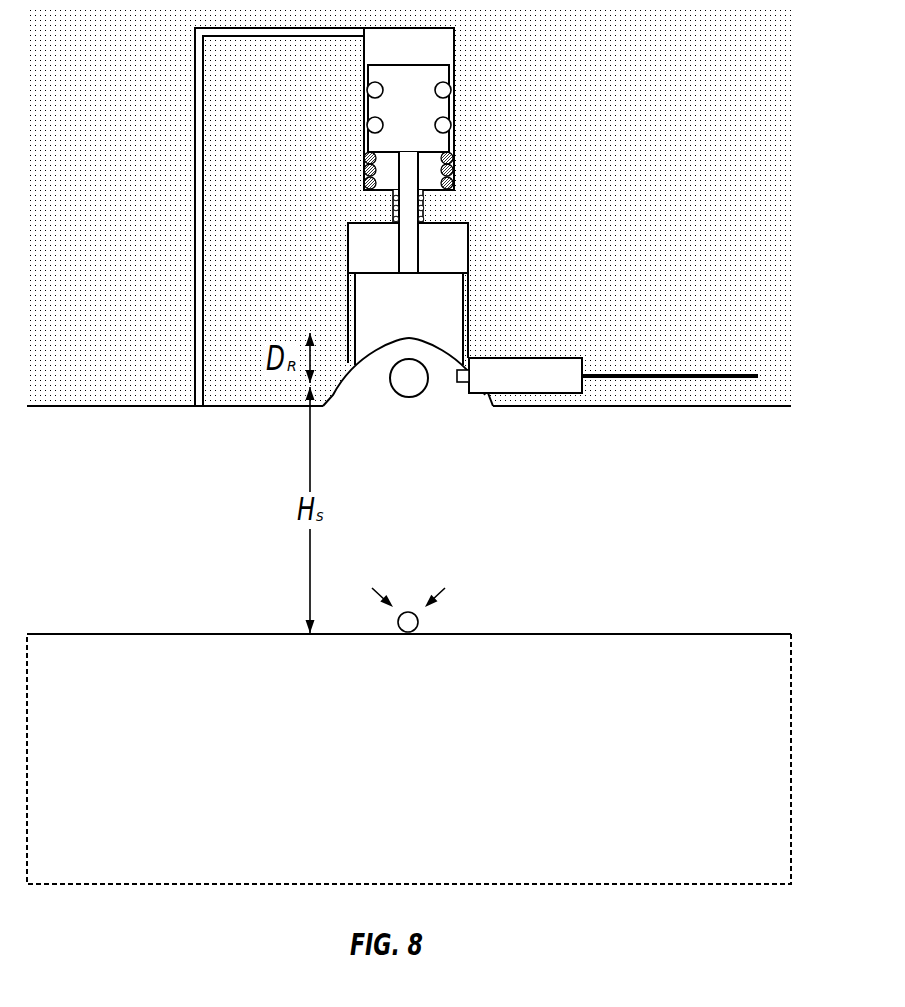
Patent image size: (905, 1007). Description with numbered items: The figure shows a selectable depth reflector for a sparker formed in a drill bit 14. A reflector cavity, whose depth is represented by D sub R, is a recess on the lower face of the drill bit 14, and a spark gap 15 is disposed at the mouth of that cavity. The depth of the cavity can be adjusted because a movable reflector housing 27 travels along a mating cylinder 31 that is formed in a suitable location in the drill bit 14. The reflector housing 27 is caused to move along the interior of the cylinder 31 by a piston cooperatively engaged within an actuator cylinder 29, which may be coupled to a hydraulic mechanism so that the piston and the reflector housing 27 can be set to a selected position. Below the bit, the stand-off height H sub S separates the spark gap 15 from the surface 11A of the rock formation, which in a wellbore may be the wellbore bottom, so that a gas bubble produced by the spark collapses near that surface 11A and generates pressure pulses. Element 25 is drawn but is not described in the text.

The drill bit 14 is at (791, 210).
The actuator cylinder 29 is at (424, 59).
The movable reflector housing 27 is at (424, 122).
The mating cylinder 31 is at (459, 262).
The nozzle chamber 25 is at (422, 319).
The spark gap 15 is at (541, 384).
The surface of the rock formation 11A is at (592, 633).